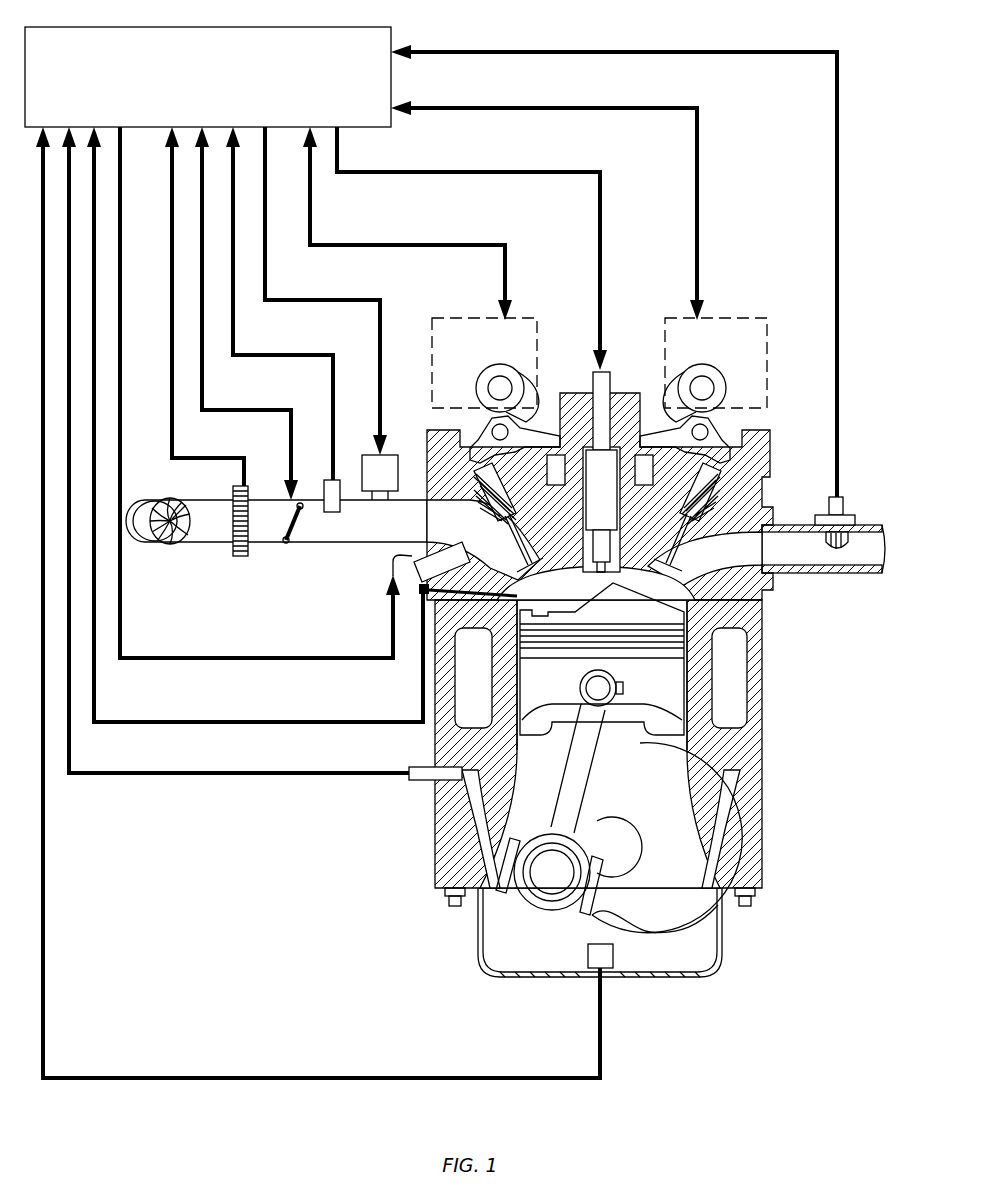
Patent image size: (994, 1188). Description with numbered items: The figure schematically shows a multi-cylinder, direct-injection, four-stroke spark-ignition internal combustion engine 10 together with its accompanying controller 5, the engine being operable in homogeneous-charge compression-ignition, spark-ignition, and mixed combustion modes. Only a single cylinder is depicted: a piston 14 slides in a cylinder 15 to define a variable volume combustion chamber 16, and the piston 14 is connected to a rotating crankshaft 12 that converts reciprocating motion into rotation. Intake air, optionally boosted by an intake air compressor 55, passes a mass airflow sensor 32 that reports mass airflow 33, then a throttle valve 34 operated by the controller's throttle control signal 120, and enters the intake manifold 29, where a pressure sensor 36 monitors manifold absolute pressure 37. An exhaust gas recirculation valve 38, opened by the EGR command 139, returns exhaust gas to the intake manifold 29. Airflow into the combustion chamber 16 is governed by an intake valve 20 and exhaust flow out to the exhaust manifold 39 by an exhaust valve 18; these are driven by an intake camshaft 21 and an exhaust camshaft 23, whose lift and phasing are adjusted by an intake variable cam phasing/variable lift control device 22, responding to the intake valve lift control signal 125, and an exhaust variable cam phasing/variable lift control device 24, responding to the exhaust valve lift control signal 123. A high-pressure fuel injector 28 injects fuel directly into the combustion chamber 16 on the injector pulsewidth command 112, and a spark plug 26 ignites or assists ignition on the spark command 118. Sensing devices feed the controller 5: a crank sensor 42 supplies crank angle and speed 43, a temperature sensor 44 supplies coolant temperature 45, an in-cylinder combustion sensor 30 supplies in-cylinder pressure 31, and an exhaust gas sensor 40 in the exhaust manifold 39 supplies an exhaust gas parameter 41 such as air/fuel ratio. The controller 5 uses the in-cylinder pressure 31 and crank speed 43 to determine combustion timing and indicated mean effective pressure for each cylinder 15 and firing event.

The controller 5 is at (208, 77).
The internal combustion engine 10 is at (768, 748).
The crankshaft 12 is at (664, 905).
The piston 14 is at (602, 659).
The cylinder 15 is at (694, 628).
The combustion chamber 16 is at (596, 586).
The exhaust valve 18 is at (672, 560).
The intake valve 20 is at (484, 548).
The intake camshaft 21 is at (506, 388).
The intake variable cam phasing/variable lift control device 22 is at (484, 363).
The exhaust camshaft 23 is at (708, 390).
The exhaust variable cam phasing/variable lift control device 24 is at (716, 363).
The spark plug 26 is at (605, 372).
The fuel injector 28 is at (394, 580).
The intake manifold 29 is at (410, 500).
The in-cylinder combustion sensor 30 is at (421, 665).
The in-cylinder pressure 31 is at (255, 425).
The mass airflow sensor 32 is at (242, 558).
The mass airflow 33 is at (204, 306).
The throttle valve 34 is at (293, 538).
The pressure sensor 36 is at (332, 514).
The manifold absolute pressure 37 is at (279, 303).
The exhaust gas recirculation valve 38 is at (370, 493).
The exhaust manifold 39 is at (783, 523).
The exhaust gas sensor 40 is at (848, 510).
The exhaust gas parameter 41 is at (614, 260).
The crank sensor 42 is at (592, 965).
The crank angle and speed 43 is at (318, 602).
The temperature sensor 44 is at (409, 775).
The coolant temperature 45 is at (235, 450).
The intake air compressor 55 is at (178, 545).
The injector pulsewidth command 112 is at (266, 392).
The spark command 118 is at (472, 248).
The throttle control signal 120 is at (246, 313).
The exhaust valve lift control signal 123 is at (547, 202).
The intake valve lift control signal 125 is at (407, 223).
The EGR command 139 is at (326, 291).